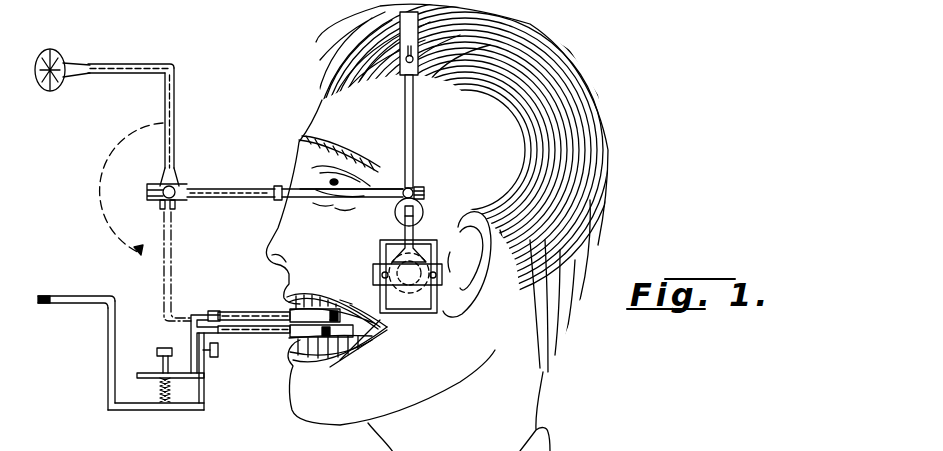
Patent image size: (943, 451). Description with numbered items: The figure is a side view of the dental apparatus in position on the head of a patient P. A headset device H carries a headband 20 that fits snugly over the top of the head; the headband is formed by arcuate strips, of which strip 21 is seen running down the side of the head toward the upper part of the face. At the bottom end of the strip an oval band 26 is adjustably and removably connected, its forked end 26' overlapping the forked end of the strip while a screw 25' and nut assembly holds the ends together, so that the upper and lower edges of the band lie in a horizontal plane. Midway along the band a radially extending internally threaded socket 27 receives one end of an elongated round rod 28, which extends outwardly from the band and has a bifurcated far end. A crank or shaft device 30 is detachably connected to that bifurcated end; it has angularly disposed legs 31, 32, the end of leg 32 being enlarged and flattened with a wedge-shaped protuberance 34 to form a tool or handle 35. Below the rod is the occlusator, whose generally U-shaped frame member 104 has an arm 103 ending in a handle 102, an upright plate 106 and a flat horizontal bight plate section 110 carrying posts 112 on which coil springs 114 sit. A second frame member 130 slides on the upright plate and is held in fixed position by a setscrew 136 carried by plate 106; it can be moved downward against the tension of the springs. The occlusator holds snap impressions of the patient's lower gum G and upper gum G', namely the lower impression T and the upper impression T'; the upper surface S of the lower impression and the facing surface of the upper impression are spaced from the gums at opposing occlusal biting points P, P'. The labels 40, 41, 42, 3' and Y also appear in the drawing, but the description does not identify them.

The headband 20 is at (478, 22).
The arcuate strip 21 is at (409, 137).
The screw 25' is at (393, 170).
The bifurcated or forked end 26' is at (432, 177).
The oval band 26 is at (351, 211).
The internally threaded socket 27 is at (277, 186).
The elongated round rod 28 is at (233, 199).
The crank or shaft device 30 is at (178, 89).
The leg 31 is at (175, 135).
The leg 32 is at (113, 64).
The wedge shaped protuberance 34 is at (38, 87).
The tool or handle 35 is at (37, 50).
The hinge axis disc 40 is at (418, 212).
The stem 41 is at (403, 244).
The locator plate 42 is at (409, 313).
The handle 102 is at (72, 295).
The arm 103 is at (108, 359).
The U-shaped frame member 104 is at (155, 414).
The upright plate 106 is at (203, 393).
The bight plate section 110 is at (130, 410).
The posts or shafts 112 is at (162, 365).
The coil springs 114 is at (173, 392).
The second frame member 130 is at (194, 310).
The setscrew 136 is at (219, 352).
The headset device H is at (288, 183).
The patient P is at (413, 275).
The opposing occlusal point P' is at (285, 356).
The lower impression T is at (330, 369).
The upper impression T' is at (327, 286).
The lower gum G is at (340, 355).
The upper gum G' is at (345, 298).
The upper surface of lower impression S is at (351, 354).
The bite block 3' is at (348, 291).
The ear Y is at (467, 264).